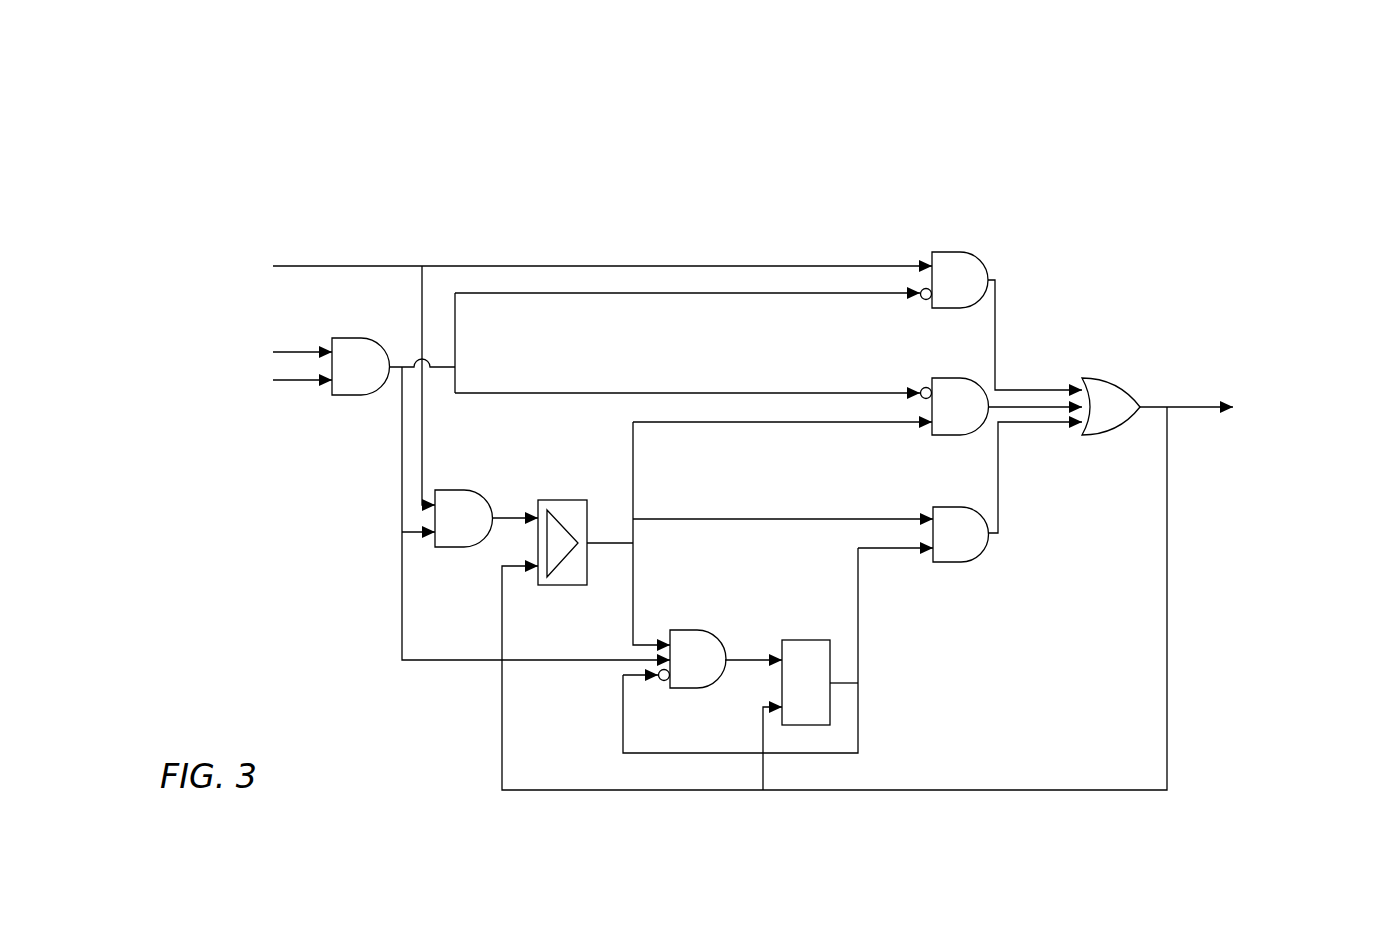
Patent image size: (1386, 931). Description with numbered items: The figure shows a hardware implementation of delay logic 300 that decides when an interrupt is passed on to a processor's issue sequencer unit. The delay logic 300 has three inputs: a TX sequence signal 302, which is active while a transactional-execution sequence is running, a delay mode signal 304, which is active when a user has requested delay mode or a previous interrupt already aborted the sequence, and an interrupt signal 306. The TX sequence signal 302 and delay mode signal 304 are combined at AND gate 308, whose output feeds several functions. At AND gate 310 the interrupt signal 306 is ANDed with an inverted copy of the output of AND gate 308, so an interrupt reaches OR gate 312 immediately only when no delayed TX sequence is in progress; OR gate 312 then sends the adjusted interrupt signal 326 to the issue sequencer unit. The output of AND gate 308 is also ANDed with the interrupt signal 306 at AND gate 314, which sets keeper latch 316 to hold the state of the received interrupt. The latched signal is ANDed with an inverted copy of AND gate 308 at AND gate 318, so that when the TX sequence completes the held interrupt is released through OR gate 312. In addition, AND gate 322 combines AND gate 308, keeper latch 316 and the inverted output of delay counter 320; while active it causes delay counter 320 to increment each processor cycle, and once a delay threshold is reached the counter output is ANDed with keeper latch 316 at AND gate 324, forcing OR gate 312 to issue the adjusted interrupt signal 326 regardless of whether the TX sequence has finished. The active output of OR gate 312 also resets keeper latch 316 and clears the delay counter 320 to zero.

The delay logic 300 is at (1162, 96).
The TX sequence signal 302 is at (139, 327).
The delay mode signal 304 is at (140, 403).
The interrupt signal 306 is at (158, 250).
The AND gate 308 is at (340, 338).
The AND gate 310 is at (942, 250).
The OR gate 312 is at (1097, 380).
The AND gate 314 is at (458, 490).
The keeper latch 316 is at (568, 500).
The AND gate 318 is at (942, 378).
The delay counter 320 is at (798, 640).
The AND gate 322 is at (690, 630).
The AND gate 324 is at (942, 507).
The adjusted interrupt signal 326 is at (1293, 368).